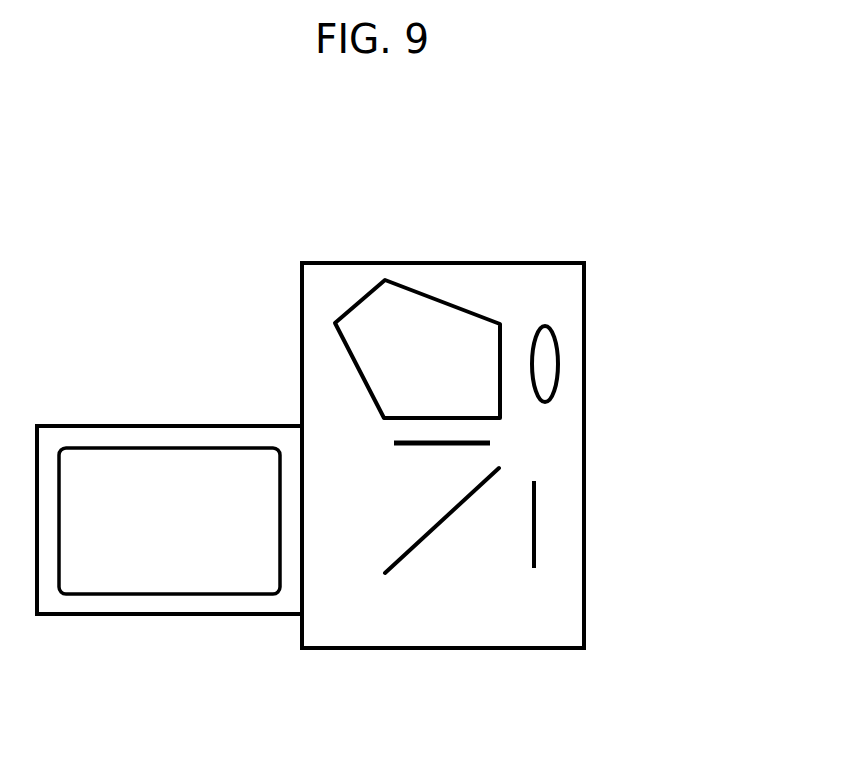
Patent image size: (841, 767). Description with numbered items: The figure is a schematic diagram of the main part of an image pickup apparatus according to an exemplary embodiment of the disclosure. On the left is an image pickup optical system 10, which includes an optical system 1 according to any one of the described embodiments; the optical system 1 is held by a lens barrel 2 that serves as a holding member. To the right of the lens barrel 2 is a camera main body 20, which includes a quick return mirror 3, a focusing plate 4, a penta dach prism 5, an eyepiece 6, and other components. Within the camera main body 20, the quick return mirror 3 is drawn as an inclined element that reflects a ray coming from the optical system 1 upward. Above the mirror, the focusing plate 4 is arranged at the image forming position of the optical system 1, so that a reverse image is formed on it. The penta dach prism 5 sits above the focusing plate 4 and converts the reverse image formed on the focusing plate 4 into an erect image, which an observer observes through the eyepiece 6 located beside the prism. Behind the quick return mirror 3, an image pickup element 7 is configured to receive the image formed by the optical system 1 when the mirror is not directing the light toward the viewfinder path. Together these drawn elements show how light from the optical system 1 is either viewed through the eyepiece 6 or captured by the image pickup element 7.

The optical system 1 is at (142, 448).
The lens barrel 2 is at (158, 613).
The quick return mirror 3 is at (415, 547).
The focusing plate 4 is at (418, 445).
The penta dach prism 5 is at (368, 292).
The eyepiece 6 is at (557, 365).
The image pickup element 7 is at (533, 523).
The image pickup optical system 10 is at (217, 423).
The camera main body 20 is at (582, 598).